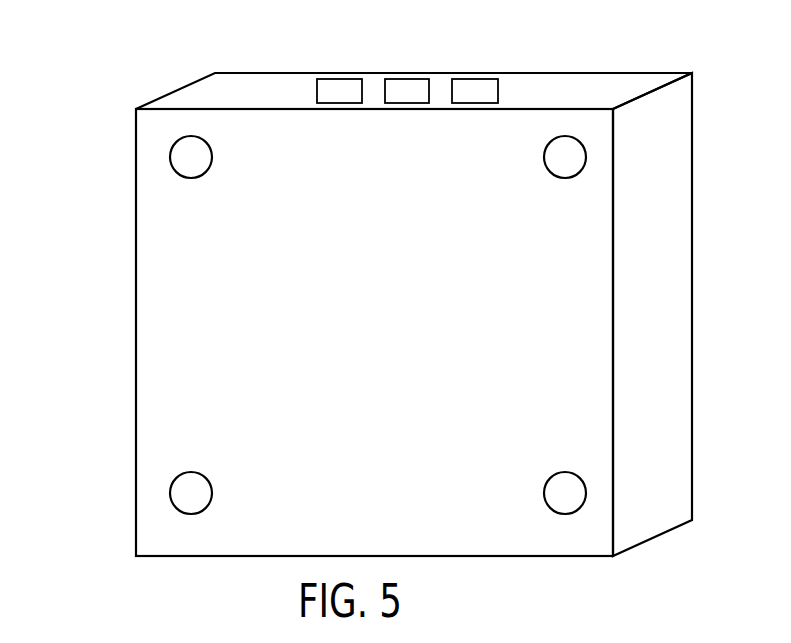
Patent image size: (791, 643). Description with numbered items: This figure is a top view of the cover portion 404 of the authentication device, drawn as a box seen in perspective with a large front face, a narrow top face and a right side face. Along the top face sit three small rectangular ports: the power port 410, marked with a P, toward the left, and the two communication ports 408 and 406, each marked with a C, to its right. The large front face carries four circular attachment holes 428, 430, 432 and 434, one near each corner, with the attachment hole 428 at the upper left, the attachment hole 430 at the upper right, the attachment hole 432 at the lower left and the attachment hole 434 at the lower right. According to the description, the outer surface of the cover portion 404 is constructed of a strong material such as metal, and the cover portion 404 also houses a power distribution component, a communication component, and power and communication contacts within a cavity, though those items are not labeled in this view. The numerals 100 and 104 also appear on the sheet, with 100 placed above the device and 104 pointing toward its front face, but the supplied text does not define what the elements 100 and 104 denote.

The computing device 100 is at (605, 58).
The housing 104 is at (98, 233).
The cover portion 404 is at (692, 195).
The communication port 406 is at (498, 90).
The communication port 408 is at (407, 79).
The power port 410 is at (317, 92).
The attachment hole 428 is at (191, 178).
The attachment hole 430 is at (565, 178).
The attachment hole 432 is at (191, 472).
The attachment hole 434 is at (565, 472).